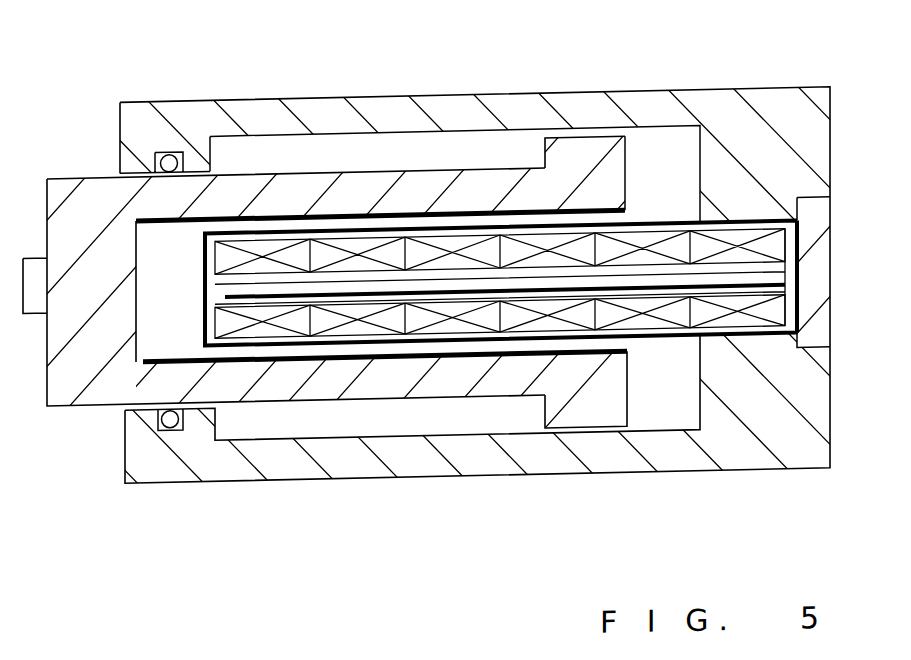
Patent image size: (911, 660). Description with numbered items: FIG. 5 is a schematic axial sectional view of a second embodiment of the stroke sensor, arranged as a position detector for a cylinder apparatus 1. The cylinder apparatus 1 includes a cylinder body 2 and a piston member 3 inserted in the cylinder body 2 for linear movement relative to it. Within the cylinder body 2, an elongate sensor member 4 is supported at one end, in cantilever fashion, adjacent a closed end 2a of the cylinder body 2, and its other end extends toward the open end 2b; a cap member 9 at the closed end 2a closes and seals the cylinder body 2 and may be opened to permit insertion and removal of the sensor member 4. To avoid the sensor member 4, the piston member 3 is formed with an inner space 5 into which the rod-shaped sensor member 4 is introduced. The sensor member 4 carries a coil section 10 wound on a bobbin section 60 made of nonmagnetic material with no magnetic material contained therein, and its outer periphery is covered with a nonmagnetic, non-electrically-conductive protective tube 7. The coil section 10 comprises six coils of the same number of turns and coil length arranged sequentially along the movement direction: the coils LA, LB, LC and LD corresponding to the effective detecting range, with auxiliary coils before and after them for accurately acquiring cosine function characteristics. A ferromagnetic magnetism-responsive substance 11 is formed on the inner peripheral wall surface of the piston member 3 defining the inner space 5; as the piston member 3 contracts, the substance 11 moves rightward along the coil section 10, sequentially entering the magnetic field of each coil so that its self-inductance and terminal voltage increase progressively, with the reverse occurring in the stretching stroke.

The cylinder apparatus 1 is at (138, 73).
The cylinder body 2 is at (375, 93).
The closed end 2a is at (703, 191).
The open end 2b is at (207, 147).
The piston member 3 is at (87, 195).
The sensor member 4 is at (147, 356).
The inner space 5 is at (195, 330).
The protective tube 7 is at (203, 242).
The cap member 9 is at (817, 256).
The coil section 10 is at (665, 217).
The magnetism-responsive substance 11 is at (592, 206).
The bobbin section 60 is at (213, 475).
The coil segment LA is at (362, 318).
The coil segment LB is at (455, 320).
The coil segment LC is at (552, 322).
The coil segment LD is at (650, 322).